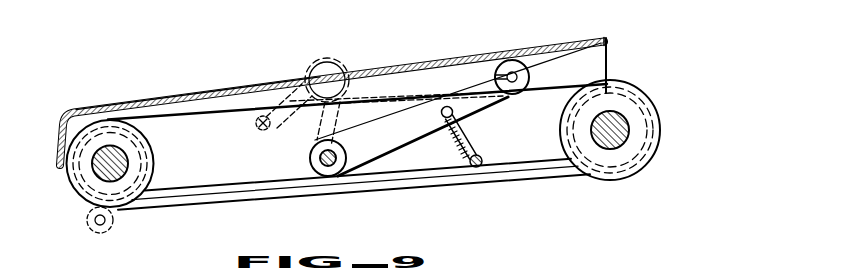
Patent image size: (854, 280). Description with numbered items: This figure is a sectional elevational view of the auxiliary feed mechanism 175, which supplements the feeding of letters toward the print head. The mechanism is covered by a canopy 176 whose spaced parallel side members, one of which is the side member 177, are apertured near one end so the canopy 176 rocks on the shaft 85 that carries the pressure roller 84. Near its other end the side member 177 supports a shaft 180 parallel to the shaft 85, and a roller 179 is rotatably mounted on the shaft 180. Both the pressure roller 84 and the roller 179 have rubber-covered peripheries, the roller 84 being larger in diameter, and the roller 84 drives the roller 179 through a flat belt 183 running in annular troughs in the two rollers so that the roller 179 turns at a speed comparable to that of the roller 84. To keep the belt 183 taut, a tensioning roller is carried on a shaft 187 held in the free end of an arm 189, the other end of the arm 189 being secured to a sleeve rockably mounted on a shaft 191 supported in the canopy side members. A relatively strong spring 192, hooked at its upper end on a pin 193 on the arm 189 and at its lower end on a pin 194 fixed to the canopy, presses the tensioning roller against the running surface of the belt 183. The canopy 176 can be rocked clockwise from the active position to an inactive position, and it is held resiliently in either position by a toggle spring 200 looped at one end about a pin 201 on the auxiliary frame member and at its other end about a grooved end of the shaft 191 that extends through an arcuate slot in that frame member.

The pressure roller 84 is at (652, 99).
The shaft 85 is at (621, 130).
The auxiliary feed mechanism 175 is at (436, 59).
The canopy 176 is at (208, 90).
The side member 177 is at (600, 57).
The roller 179 is at (151, 172).
The shaft 180 is at (123, 160).
The flat belt 183 is at (530, 177).
The shaft 187 is at (518, 76).
The arm 189 is at (381, 149).
The shaft 191 is at (320, 158).
The spring 192 is at (471, 134).
The pin 193 is at (442, 112).
The pin 194 is at (482, 160).
The toggle spring 200 is at (345, 63).
The pin 201 is at (257, 128).